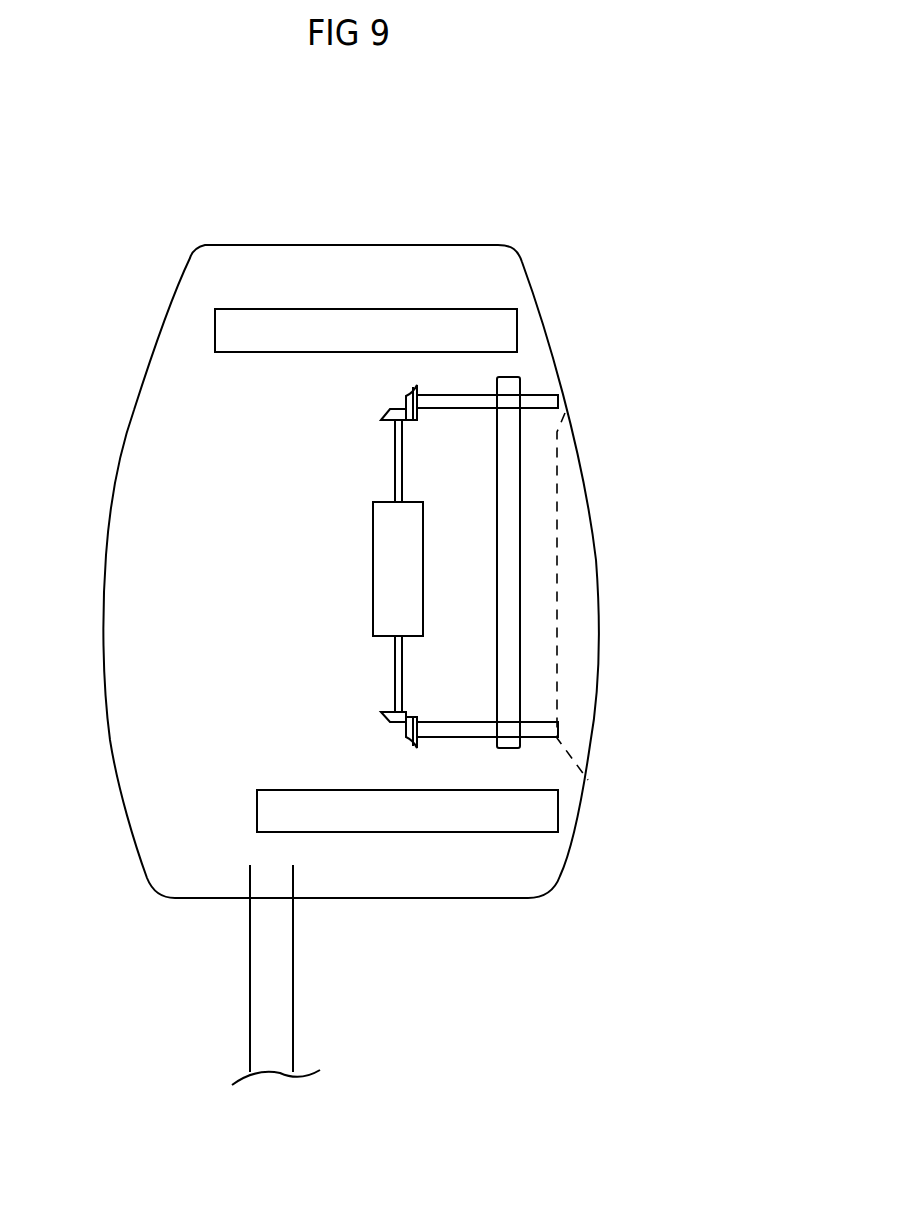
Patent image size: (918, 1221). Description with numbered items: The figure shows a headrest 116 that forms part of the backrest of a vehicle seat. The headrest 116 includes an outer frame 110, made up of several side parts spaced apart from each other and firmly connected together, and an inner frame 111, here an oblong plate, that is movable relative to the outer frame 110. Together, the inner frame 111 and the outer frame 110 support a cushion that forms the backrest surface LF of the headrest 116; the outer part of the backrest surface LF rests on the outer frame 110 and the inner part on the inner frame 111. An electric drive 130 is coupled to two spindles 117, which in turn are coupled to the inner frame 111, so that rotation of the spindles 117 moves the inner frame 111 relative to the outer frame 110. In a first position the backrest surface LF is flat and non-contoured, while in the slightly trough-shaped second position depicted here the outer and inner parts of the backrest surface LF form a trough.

The headrest 116 is at (150, 330).
The outer frame 110 is at (410, 320).
The inner frame 111 is at (508, 552).
The spindles 117 is at (448, 400).
The electric drive 130 is at (378, 590).
The backrest surface LF is at (618, 392).